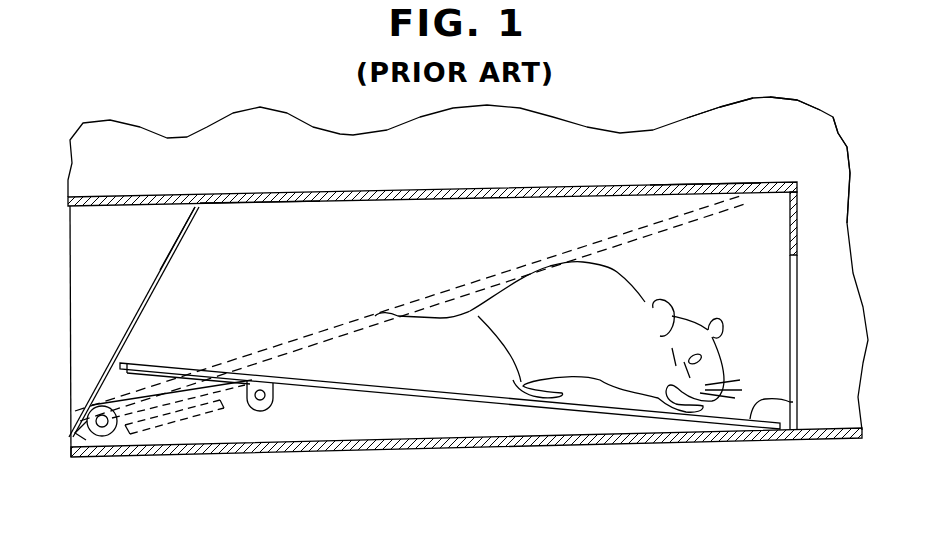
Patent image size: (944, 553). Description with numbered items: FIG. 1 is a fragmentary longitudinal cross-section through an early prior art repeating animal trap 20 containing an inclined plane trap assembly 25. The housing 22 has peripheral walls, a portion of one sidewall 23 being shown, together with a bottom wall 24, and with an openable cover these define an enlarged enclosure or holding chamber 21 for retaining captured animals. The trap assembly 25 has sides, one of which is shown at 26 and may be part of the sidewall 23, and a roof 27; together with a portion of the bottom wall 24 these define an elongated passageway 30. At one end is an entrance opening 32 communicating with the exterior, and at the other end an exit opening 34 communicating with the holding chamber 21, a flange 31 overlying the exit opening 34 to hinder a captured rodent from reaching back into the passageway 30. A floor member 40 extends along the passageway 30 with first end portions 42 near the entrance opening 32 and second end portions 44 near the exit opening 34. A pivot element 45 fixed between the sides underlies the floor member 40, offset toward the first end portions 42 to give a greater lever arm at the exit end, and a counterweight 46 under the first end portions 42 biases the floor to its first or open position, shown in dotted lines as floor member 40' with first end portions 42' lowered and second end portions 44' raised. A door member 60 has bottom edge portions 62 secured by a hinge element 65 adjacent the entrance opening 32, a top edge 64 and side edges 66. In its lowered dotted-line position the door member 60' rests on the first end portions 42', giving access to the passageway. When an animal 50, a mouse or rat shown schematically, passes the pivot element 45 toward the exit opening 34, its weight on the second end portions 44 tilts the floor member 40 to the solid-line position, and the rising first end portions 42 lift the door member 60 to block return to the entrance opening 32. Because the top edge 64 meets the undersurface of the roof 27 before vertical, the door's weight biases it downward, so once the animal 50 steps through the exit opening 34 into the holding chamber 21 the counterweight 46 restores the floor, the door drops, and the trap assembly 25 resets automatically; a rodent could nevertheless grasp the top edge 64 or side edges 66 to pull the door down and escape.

The repeating animal trap 20 is at (228, 97).
The holding chamber 21 is at (831, 177).
The housing 22 is at (720, 108).
The sidewall 23 is at (795, 113).
The bottom wall 24 is at (817, 438).
The inclined plane trap assembly 25 is at (589, 186).
The side 26 is at (252, 217).
The roof 27 is at (692, 180).
The passageway 30 is at (358, 278).
The flange 31 is at (800, 227).
The entrance opening 32 is at (104, 311).
The exit opening 34 is at (832, 333).
The floor member 40 is at (450, 400).
The floor member in first position 40' is at (410, 308).
The first end portions 42 is at (172, 358).
The first end portions in first position 42' is at (178, 451).
The second end portions 44 is at (799, 405).
The second end portions in first position 44' is at (693, 249).
The pivot element 45 is at (260, 403).
The counterweight 46 is at (187, 396).
The animal 50 is at (593, 354).
The door member 60 is at (134, 322).
The door member in lowered position 60' is at (250, 321).
The bottom edge portions 62 is at (72, 427).
The top edge 64 is at (197, 198).
The hinge element 65 is at (97, 436).
The side edges 66 is at (182, 243).